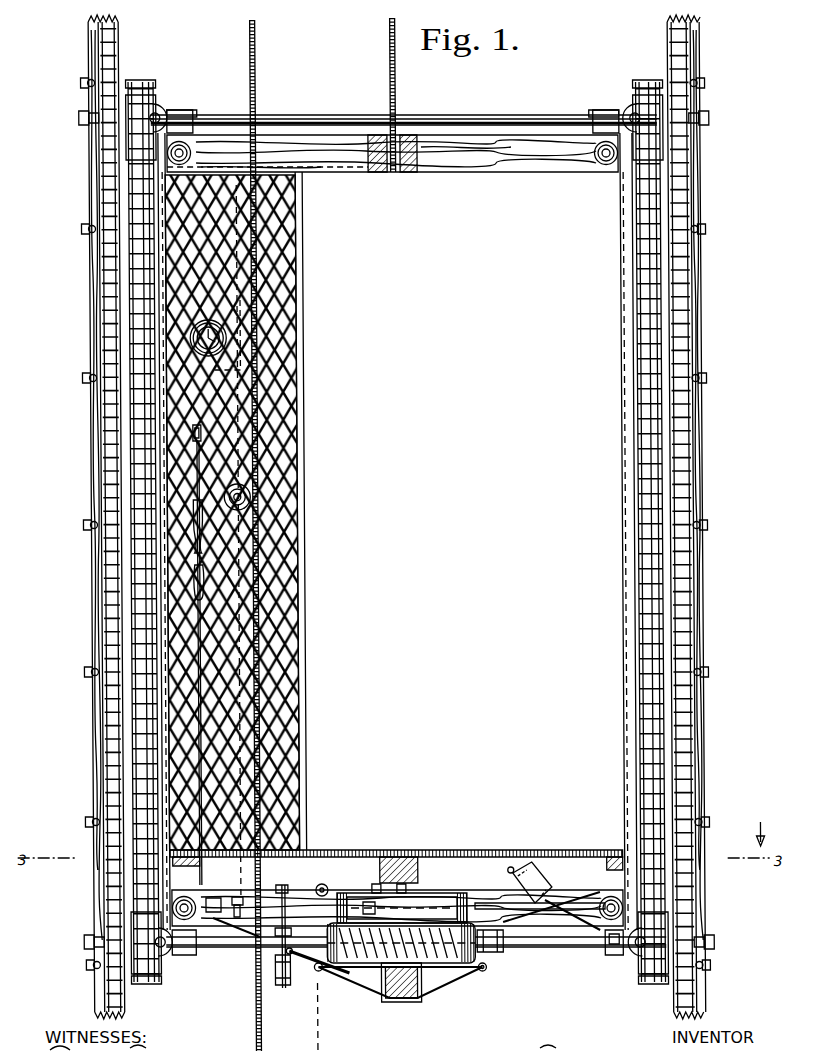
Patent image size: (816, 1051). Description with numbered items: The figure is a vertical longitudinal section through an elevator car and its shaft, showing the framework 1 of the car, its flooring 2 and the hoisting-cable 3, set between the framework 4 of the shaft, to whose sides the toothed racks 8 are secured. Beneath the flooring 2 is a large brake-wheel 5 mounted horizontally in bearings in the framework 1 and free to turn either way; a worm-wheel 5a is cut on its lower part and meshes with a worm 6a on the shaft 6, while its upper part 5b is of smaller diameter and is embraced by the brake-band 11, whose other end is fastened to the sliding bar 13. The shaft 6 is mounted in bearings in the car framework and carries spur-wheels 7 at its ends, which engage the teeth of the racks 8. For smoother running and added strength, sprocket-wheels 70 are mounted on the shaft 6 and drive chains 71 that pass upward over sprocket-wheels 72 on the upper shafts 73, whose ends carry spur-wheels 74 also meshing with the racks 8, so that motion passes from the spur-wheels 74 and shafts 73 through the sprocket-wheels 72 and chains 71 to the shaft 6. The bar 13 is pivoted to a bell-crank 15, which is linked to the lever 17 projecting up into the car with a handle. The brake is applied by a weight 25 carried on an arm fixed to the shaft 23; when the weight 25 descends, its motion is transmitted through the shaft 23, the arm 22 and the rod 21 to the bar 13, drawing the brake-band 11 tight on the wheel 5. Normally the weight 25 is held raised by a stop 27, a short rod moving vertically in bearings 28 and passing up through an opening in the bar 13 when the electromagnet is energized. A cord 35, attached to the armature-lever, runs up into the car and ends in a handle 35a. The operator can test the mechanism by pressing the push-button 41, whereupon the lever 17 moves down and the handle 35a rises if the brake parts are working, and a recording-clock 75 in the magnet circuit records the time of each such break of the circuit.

The framework of the car 1 is at (478, 164).
The flooring 2 is at (356, 851).
The hoisting-cable 3 is at (396, 93).
The framework of the shaft 4 is at (88, 37).
The brake-wheel 5 is at (476, 958).
The worm-wheel 5a is at (312, 966).
The upper part of brake-wheel 5b is at (412, 858).
The shaft 6 is at (570, 948).
The worm 6a is at (452, 962).
The spur-wheels 7 is at (100, 922).
The racks 8 is at (100, 624).
The brake-band 11 is at (462, 893).
The bar 13 is at (236, 896).
The bell-crank 15 is at (210, 897).
The lever 17 is at (200, 582).
The rod 21 is at (486, 903).
The arm 22 is at (616, 928).
The shaft 23 is at (594, 950).
The weight 25 is at (538, 868).
The stop 27 is at (282, 895).
The bearings 28 is at (282, 985).
The cord 35 is at (197, 470).
The handle 35a is at (204, 530).
The push-button 41 is at (249, 495).
The sprocket-wheels 70 is at (154, 958).
The chains 71 is at (140, 727).
The sprocket-wheels 72 is at (154, 92).
The shafts 73 is at (534, 114).
The spur-wheels 74 is at (88, 104).
The recording-clock 75 is at (222, 339).